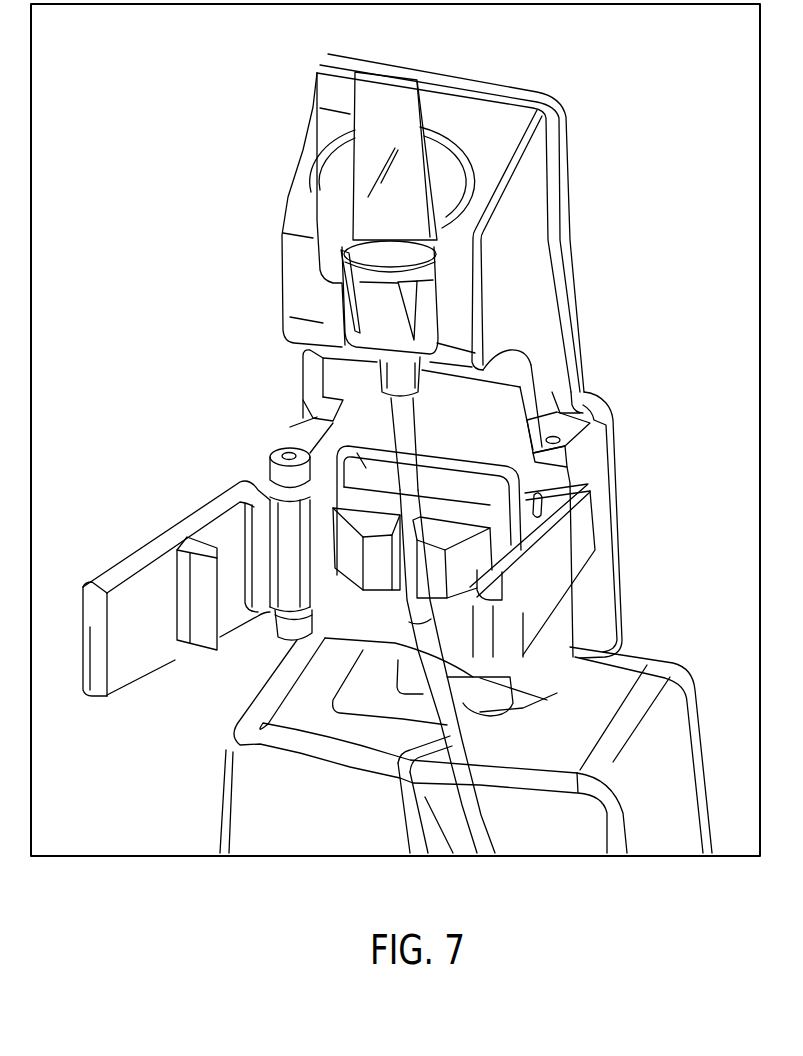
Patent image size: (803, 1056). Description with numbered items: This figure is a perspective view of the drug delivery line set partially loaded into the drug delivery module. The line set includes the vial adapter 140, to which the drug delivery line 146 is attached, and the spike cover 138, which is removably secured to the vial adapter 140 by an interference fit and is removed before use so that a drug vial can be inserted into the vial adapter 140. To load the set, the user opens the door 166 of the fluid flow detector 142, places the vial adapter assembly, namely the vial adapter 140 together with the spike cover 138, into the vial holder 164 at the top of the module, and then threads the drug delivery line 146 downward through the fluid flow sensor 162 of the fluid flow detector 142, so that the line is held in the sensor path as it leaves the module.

The spike cover 138 is at (403, 120).
The vial adapter 140 is at (320, 300).
The fluid flow detector 142 is at (630, 408).
The drug delivery line 146 is at (487, 830).
The fluid flow sensor 162 is at (348, 450).
The vial holder 164 is at (588, 153).
The door 166 is at (137, 552).